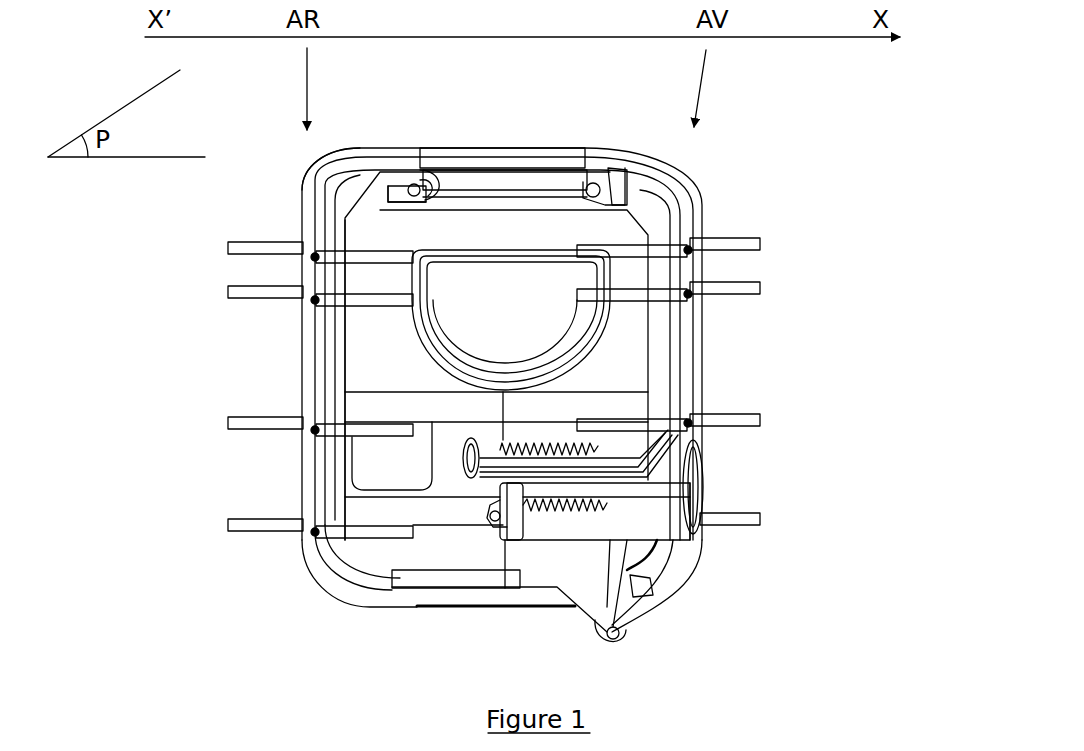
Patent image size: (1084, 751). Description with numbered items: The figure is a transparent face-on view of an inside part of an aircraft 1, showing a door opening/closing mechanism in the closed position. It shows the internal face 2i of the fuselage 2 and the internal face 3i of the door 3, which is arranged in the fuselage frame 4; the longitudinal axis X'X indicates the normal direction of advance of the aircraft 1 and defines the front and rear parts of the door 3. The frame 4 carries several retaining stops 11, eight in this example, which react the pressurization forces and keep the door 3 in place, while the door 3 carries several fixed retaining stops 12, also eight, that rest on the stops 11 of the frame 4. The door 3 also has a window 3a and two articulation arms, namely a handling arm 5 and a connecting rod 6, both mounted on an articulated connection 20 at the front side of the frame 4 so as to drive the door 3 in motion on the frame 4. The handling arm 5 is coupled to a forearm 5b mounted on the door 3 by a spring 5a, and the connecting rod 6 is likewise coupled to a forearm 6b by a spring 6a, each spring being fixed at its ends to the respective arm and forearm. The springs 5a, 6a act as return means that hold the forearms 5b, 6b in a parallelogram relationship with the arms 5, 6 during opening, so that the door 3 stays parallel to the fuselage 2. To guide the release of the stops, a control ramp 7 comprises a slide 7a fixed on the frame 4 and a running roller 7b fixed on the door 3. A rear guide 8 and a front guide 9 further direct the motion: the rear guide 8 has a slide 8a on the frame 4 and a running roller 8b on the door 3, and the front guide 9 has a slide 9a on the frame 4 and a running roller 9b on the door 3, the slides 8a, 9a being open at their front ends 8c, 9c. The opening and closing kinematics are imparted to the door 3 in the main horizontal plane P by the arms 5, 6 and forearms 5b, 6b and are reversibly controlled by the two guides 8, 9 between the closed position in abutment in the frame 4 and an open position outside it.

The aircraft 1 is at (152, 125).
The fuselage 2 is at (267, 226).
The internal face of the fuselage 2i is at (267, 320).
The door 3 is at (496, 402).
The window 3a is at (527, 325).
The internal face of the door 3i is at (368, 380).
The fuselage frame 4 is at (303, 183).
The handling arm 5 is at (640, 440).
The spring 5a is at (533, 440).
The forearm 5b is at (463, 455).
The connecting rod 6 is at (643, 508).
The spring 6a is at (690, 490).
The forearm 6b is at (490, 513).
The control ramp 7 is at (613, 165).
The slide 7a is at (620, 187).
The running roller 7b is at (597, 187).
The rear guide 8 is at (447, 187).
The slide 8a is at (405, 186).
The running roller 8b is at (400, 185).
The front end 8c is at (421, 180).
The front guide 9 is at (640, 610).
The slide 9a is at (623, 597).
The running roller 9b is at (620, 640).
The front end 9c is at (638, 587).
The retaining stops 11 is at (250, 246).
The fixed retaining stops 12 is at (368, 297).
The articulated connection 20 is at (703, 478).